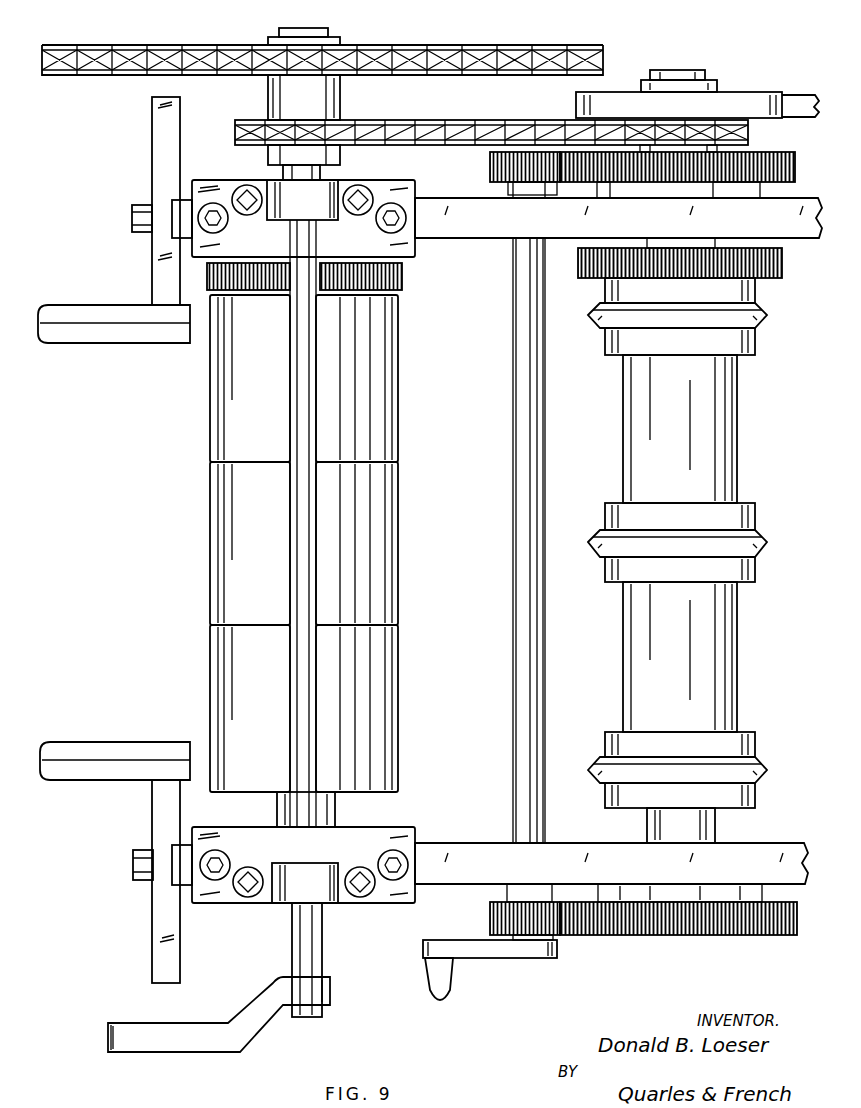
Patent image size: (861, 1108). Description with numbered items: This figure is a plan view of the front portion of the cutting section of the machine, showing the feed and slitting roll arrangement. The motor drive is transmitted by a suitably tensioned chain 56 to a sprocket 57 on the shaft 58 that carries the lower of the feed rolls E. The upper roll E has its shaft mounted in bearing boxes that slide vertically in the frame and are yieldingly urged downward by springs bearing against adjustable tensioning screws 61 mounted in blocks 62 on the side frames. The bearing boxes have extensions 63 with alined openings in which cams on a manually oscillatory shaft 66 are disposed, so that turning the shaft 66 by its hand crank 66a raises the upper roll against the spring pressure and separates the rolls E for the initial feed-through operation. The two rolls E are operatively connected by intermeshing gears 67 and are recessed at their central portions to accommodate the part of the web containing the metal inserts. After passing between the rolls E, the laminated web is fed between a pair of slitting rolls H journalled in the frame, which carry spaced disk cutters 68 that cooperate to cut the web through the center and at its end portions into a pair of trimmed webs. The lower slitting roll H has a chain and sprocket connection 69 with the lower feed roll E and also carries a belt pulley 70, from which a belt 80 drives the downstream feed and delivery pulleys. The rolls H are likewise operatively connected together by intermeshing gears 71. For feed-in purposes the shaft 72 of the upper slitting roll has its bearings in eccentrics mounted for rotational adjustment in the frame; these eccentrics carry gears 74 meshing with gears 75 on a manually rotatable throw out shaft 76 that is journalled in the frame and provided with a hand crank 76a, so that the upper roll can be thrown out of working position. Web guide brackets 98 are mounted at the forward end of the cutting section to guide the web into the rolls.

The chain 56 is at (605, 60).
The sprocket 57 is at (483, 45).
The shaft 58 is at (283, 172).
The adjustable tensioning screws 61 is at (250, 214).
The blocks 62 is at (407, 831).
The extensions 63 is at (297, 211).
The manually oscillatory shaft 66 is at (300, 938).
The hand crank 66a is at (181, 1031).
The intermeshing gears 67 is at (403, 280).
The disk cutters 68 is at (768, 315).
The chain and sprocket connection 69 is at (490, 124).
The belt pulley 70 is at (758, 92).
The intermeshing gears 71 is at (783, 258).
The shaft 72 is at (713, 246).
The gears 74 is at (796, 165).
The gears 75 is at (488, 166).
The throw out shaft 76 is at (527, 537).
The hand crank 76a is at (425, 954).
The belt 80 is at (800, 101).
The web guide brackets 98 is at (87, 313).
The feed rolls E is at (400, 427).
The slitting rolls H is at (727, 656).